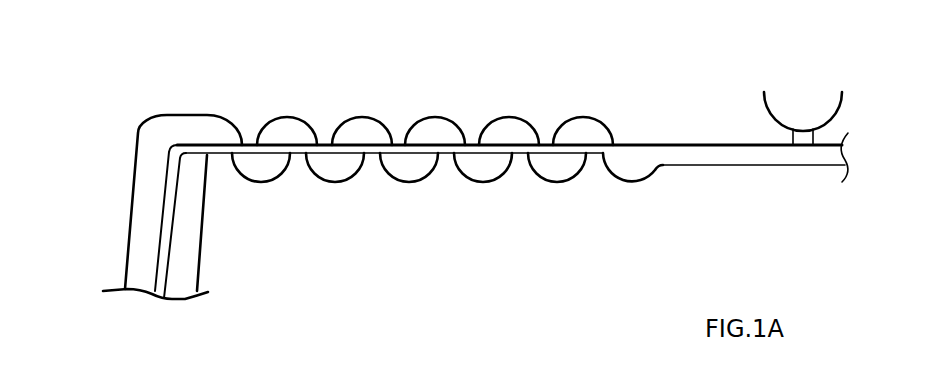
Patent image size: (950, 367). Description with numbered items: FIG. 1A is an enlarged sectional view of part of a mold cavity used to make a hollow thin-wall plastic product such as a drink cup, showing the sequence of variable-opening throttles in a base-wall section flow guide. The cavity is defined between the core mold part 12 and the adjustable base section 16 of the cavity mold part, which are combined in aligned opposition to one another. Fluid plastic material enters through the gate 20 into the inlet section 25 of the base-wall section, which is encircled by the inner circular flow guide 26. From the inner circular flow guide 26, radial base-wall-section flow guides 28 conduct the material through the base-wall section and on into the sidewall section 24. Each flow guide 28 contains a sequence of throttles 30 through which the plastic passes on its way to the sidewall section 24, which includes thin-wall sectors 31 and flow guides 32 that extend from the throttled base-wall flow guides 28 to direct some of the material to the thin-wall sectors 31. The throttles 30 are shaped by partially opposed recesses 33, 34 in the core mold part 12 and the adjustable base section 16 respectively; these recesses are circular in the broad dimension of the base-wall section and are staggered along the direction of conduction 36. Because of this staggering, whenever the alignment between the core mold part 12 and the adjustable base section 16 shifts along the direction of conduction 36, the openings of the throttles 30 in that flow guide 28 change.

The core mold part 12 is at (538, 238).
The adjustable base section 16 is at (654, 93).
The gate 20 is at (800, 140).
The sidewall section 24 is at (118, 229).
The inlet section 25 is at (687, 165).
The inner circular flow guide 26 is at (622, 182).
The radial flow guide 28 is at (410, 127).
The variable-opening throttle 30 is at (240, 138).
The thin-wall sector 31 is at (168, 273).
The sidewall-section flow guide 32 is at (145, 192).
The recess in core mold part 33 is at (268, 173).
The recess in adjustable base section 34 is at (222, 128).
The direction of conduction 36 is at (323, 278).